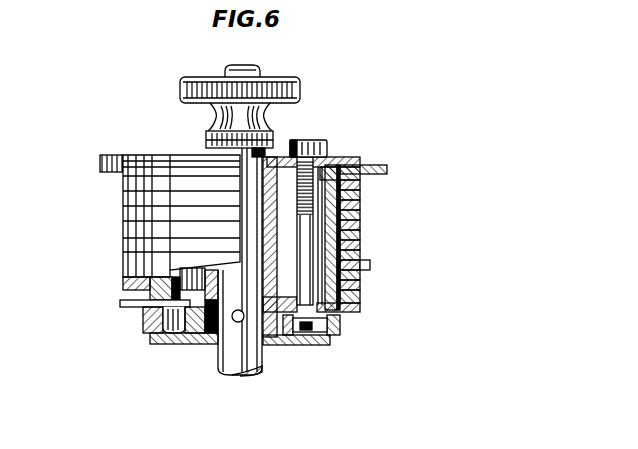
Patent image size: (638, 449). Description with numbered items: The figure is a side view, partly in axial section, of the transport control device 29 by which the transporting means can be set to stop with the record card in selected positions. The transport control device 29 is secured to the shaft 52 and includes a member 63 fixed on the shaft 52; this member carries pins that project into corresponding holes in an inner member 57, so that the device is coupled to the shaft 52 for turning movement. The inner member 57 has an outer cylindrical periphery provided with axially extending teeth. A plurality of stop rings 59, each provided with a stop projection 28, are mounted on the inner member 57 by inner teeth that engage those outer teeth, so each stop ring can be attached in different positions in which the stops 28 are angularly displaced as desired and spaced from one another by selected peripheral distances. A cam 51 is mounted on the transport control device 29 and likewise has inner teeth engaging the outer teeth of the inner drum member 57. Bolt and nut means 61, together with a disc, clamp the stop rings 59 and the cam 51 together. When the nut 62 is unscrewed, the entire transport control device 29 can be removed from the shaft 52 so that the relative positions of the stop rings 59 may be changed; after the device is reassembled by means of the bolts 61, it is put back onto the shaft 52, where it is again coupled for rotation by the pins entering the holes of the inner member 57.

The stop projection 28 is at (370, 265).
The transport control device 29 is at (112, 228).
The cam 51 is at (388, 168).
The shaft 52 is at (218, 360).
The inner member 57 is at (330, 158).
The stop rings 59 is at (360, 213).
The bolt and nut means 61 is at (306, 143).
The nut 62 is at (214, 118).
The member 63 is at (300, 345).